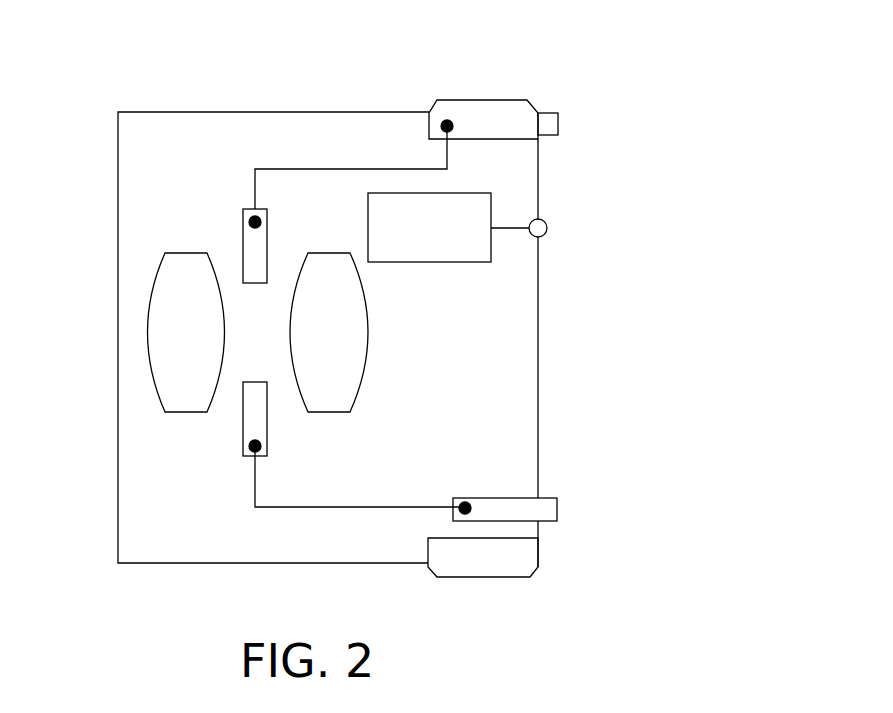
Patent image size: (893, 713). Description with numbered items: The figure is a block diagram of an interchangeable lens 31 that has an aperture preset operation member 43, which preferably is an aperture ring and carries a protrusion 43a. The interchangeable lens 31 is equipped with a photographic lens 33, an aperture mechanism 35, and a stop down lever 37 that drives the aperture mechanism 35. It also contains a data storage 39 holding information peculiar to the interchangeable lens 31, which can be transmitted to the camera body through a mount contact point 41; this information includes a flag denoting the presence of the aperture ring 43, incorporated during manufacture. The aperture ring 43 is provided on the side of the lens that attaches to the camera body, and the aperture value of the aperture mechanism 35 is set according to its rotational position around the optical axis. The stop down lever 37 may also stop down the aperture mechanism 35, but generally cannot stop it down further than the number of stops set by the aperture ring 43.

The interchangeable lens 31 is at (284, 112).
The photographic lens 33 is at (152, 347).
The aperture mechanism 35 is at (248, 431).
The stop down lever 37 is at (552, 511).
The data storage 39 is at (465, 262).
The mount contact point 41 is at (542, 217).
The aperture preset operation member 43 is at (505, 110).
The protrusion 43a is at (558, 121).